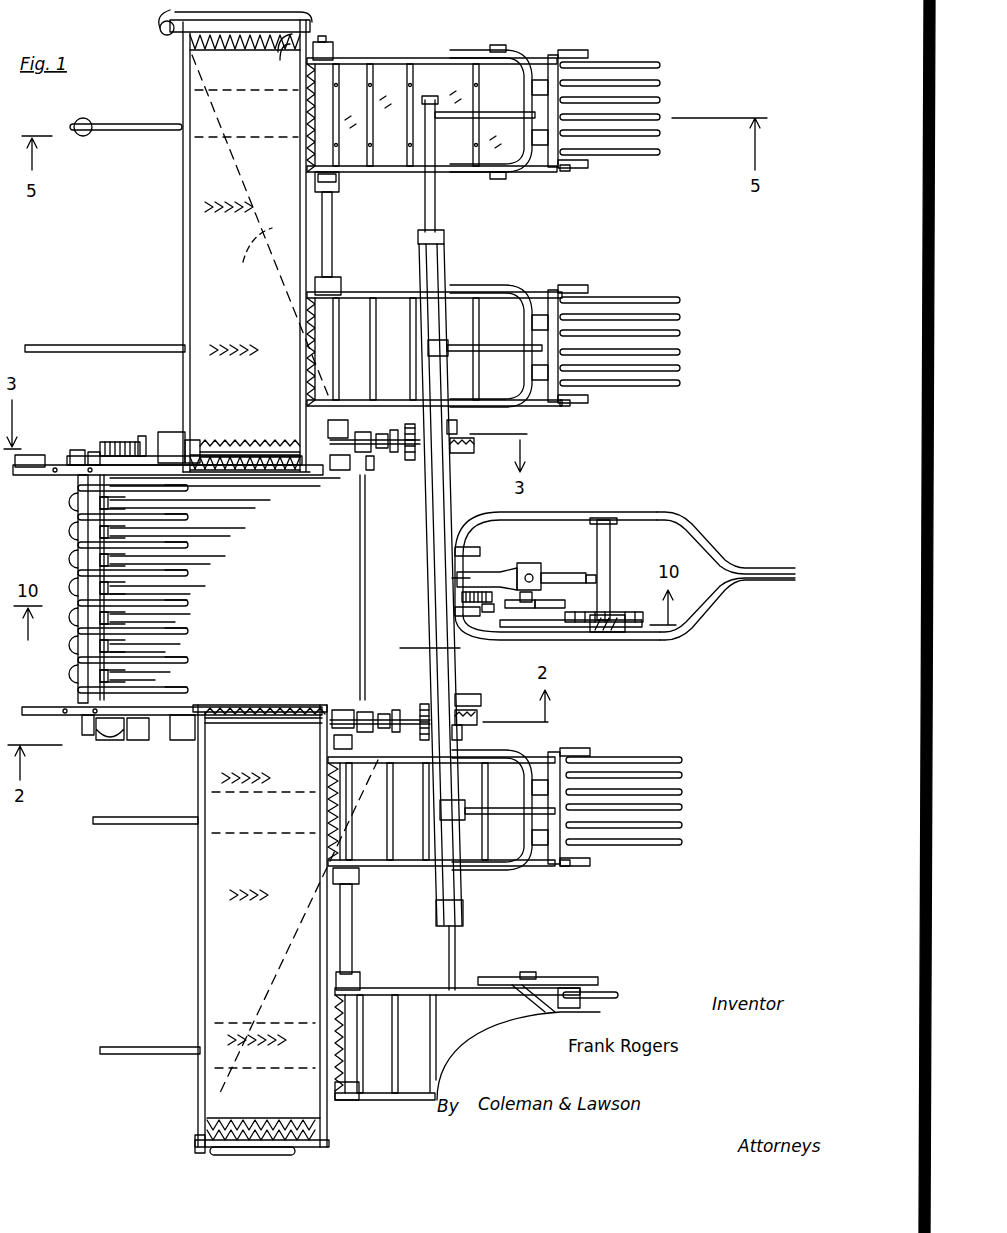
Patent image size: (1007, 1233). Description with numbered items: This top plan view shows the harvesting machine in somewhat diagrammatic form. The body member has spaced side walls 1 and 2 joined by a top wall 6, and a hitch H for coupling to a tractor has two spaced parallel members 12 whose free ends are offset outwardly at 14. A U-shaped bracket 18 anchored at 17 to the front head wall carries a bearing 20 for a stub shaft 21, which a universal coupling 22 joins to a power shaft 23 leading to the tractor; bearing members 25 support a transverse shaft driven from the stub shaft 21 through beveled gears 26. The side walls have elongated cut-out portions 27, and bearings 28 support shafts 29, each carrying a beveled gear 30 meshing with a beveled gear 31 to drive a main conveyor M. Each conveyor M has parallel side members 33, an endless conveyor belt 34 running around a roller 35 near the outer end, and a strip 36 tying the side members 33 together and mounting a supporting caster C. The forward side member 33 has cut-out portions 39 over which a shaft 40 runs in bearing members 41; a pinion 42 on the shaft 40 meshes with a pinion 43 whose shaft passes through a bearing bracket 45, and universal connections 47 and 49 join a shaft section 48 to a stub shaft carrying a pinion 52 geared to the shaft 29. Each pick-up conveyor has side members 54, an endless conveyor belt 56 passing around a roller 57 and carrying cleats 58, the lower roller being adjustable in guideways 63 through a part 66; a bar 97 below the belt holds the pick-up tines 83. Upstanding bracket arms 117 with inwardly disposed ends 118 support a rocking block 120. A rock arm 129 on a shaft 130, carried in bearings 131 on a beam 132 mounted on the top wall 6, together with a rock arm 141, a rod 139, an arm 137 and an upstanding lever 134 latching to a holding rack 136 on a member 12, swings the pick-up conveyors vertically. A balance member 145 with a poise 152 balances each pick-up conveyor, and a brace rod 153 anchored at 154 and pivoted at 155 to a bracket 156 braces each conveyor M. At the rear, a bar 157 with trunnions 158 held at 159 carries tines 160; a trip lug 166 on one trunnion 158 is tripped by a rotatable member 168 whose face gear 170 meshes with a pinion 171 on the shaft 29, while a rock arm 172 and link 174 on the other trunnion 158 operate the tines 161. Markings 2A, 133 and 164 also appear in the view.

The side wall 1 is at (345, 700).
The side wall 2 is at (272, 477).
The lower carriage bar 2A is at (402, 636).
The top wall 6 is at (360, 585).
The spaced parallel members 12 is at (572, 512).
The laterally offset portion 14 is at (485, 645).
The anchoring point 17 is at (452, 576).
The forwardly directed bracket 18 is at (480, 572).
The bearing 20 is at (528, 563).
The stub shaft 21 is at (534, 601).
The universal coupling 22 is at (566, 565).
The power shaft 23 is at (592, 575).
The bearing members 25 is at (475, 547).
The beveled gears 26 is at (462, 597).
The cut-out portions 27 is at (199, 704).
The bearings 28 is at (215, 745).
The shaft 29 is at (160, 432).
The beveled gear 30 is at (458, 426).
The beveled gear 31 is at (475, 448).
The side members 33 is at (183, 190).
The endless conveyor belt 34 is at (190, 312).
The roller 35 is at (280, 60).
The transverse strip 36 is at (318, 1160).
The cut-out portions 39 is at (315, 180).
The shaft 40 is at (333, 243).
The bearing members 41 is at (336, 182).
The pinion 42 is at (328, 440).
The pinion 43 is at (335, 470).
The bearing bracket 45 is at (310, 437).
The universal connection 47 is at (362, 432).
The shaft section 48 is at (378, 450).
The universal connection 49 is at (397, 710).
The pinion 52 is at (410, 462).
The side members 54 is at (385, 292).
The endless conveyor belt 56 is at (392, 145).
The roller 57 is at (310, 320).
The cleats 58 is at (322, 352).
The guideways 63 is at (552, 170).
The outstanding part 66 is at (497, 179).
The pick-up tine 83 is at (635, 110).
The bar 97 is at (575, 66).
The bracket arms 117 is at (483, 290).
The inwardly disposed portion 118 is at (528, 295).
The block 120 is at (558, 120).
The rock arm 129 is at (448, 120).
The shaft 130 is at (449, 952).
The supporting bearings 131 is at (444, 232).
The beam 132 is at (425, 552).
The vertical post 133 is at (610, 543).
The upstanding lever 134 is at (612, 615).
The holding rack 136 is at (618, 624).
The arm 137 is at (600, 630).
The rod 139 is at (548, 600).
The rock arm 141 is at (525, 640).
The balance member 145 is at (160, 1047).
The poise 152 is at (86, 136).
The brace rod 153 is at (262, 982).
The anchoring point 154 is at (178, 28).
The pivotal connection 155 is at (370, 470).
The bracket 156 is at (410, 475).
The bar 157 is at (75, 548).
The trunnion 158 is at (60, 458).
The rotatable holding point 159 is at (80, 708).
The tines 160 is at (185, 545).
The tines 161 is at (128, 620).
The brackets 164 is at (125, 676).
The trip lug 166 is at (78, 450).
The rotatable member 168 is at (100, 452).
The face gear 170 is at (128, 446).
The pinion 171 is at (143, 436).
The rock arm 172 is at (150, 740).
The link 174 is at (128, 740).
The supporting caster C is at (200, 50).
The hitch H is at (774, 560).
The main conveyor M is at (176, 272).